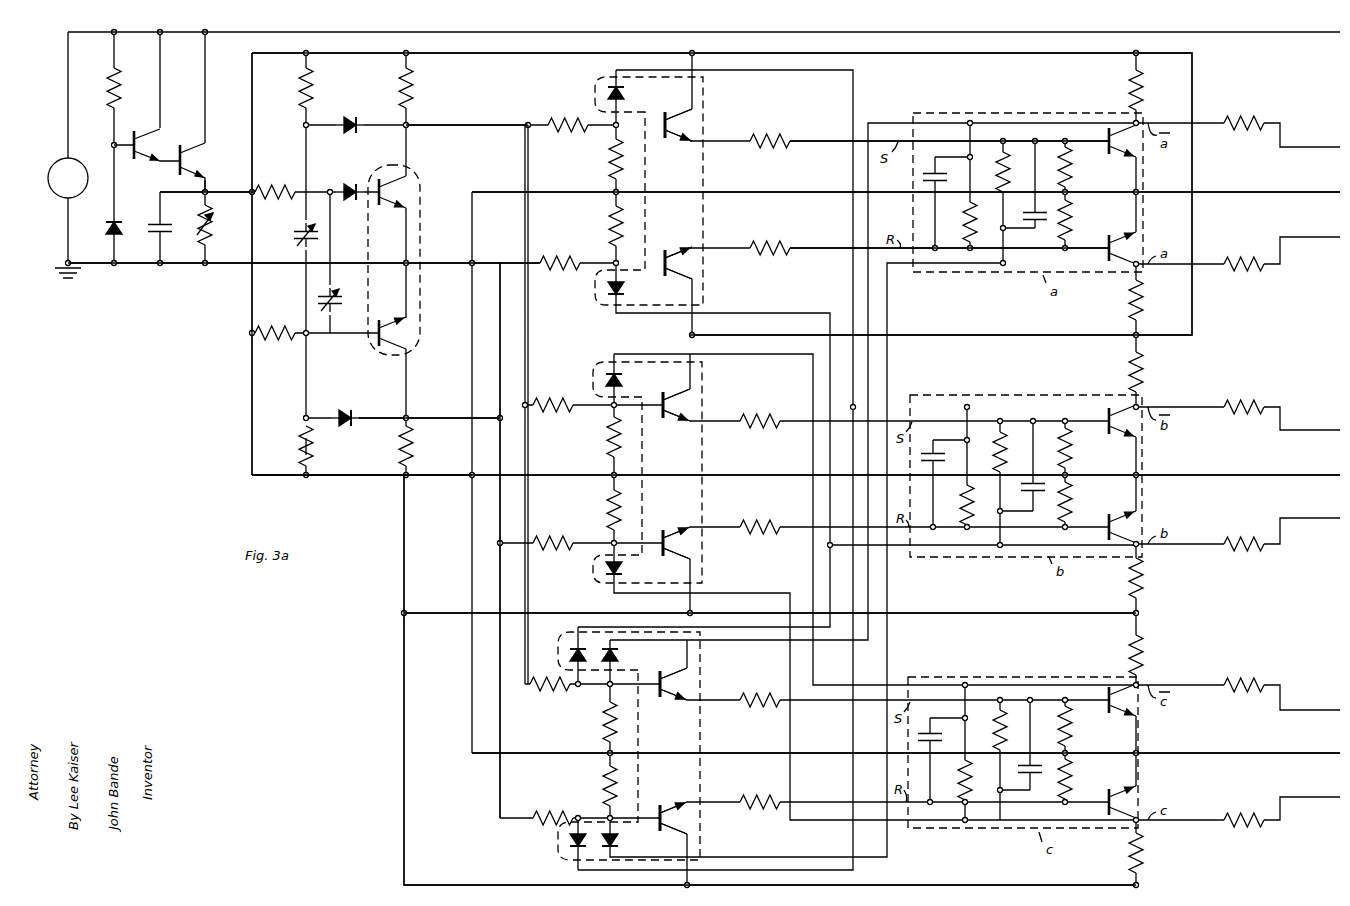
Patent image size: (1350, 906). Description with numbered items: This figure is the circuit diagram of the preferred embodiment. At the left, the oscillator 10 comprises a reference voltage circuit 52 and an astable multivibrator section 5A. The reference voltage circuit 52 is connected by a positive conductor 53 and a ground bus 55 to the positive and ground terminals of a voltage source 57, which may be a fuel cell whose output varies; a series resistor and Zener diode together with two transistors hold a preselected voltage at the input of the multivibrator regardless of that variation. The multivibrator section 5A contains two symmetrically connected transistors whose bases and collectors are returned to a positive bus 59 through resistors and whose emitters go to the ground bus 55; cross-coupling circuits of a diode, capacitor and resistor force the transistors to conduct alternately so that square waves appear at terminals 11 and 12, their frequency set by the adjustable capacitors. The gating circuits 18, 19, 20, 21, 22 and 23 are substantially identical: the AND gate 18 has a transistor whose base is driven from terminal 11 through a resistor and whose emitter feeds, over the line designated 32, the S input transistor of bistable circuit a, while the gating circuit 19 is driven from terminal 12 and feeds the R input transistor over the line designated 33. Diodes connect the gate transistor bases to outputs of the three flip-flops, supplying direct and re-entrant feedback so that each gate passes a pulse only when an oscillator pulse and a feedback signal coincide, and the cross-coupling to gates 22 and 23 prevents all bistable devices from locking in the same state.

The positive conductor 53 is at (68, 60).
The voltage source 57 is at (56, 165).
The reference voltage circuit 52 is at (116, 160).
The ground bus 55 is at (112, 266).
The oscillator 10 is at (170, 268).
The positive bus 59 is at (482, 53).
The terminal 11 is at (478, 125).
The terminal 12 is at (428, 418).
The transistor pair unit 5A is at (422, 232).
The AND gate 18 is at (685, 166).
The gating circuit 19 is at (685, 226).
The gating circuit 20 is at (688, 462).
The gating circuit 21 is at (688, 509).
The gating circuit 22 is at (682, 745).
The gating circuit 23 is at (682, 777).
The set input line to flip-flop a 32 is at (820, 141).
The reset input line to flip-flop a 33 is at (820, 248).